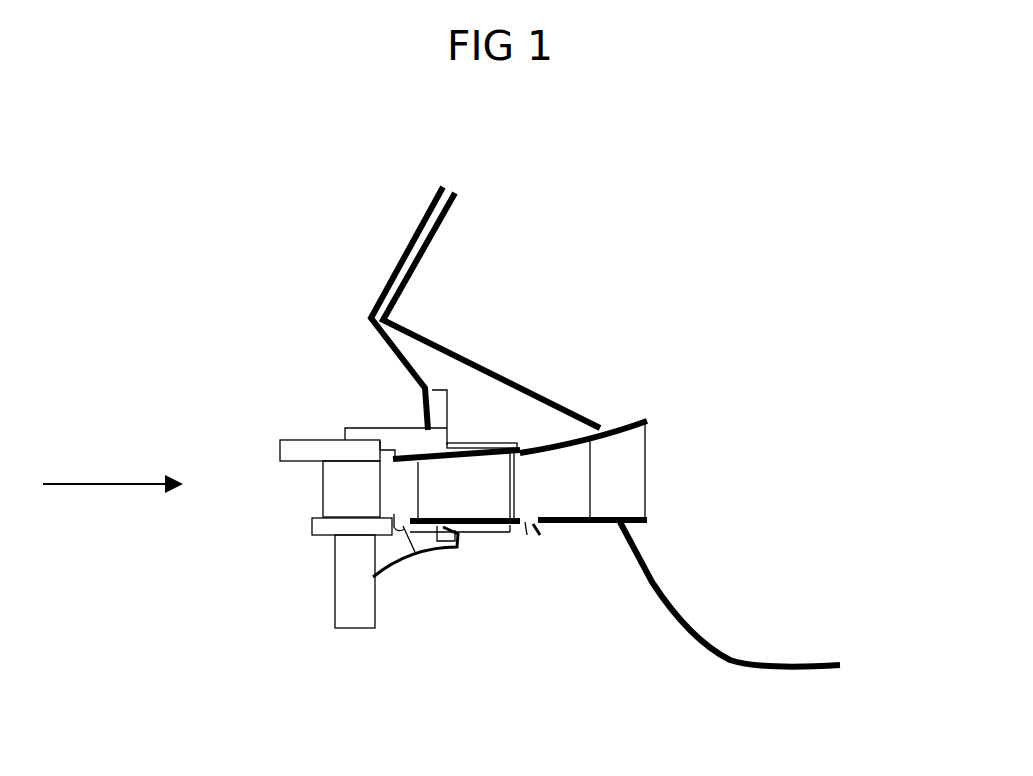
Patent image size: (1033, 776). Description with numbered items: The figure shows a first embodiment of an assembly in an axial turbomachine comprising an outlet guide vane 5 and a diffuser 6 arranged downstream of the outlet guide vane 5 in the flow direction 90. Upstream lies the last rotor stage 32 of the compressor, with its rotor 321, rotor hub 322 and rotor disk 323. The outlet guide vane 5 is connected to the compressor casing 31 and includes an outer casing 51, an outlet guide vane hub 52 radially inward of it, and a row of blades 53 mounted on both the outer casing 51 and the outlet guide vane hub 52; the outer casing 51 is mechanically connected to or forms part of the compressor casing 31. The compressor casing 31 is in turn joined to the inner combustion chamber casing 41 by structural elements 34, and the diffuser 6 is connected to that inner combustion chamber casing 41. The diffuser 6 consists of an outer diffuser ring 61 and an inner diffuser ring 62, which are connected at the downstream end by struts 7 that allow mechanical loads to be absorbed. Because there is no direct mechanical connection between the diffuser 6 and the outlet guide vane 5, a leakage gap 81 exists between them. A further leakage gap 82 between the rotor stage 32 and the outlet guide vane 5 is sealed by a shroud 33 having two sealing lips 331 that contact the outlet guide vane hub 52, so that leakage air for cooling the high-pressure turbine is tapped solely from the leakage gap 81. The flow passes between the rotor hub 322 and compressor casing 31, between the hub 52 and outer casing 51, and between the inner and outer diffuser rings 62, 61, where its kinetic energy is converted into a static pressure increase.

The flow direction 90 is at (102, 485).
The compressor casing 31 is at (362, 432).
The rotor stage 32 is at (307, 562).
The rotor 321 is at (337, 492).
The rotor hub 322 is at (315, 533).
The rotor disk 323 is at (340, 612).
The shroud 33 is at (443, 574).
The sealing lips 331 is at (461, 532).
The structural elements 34 is at (392, 343).
The inner combustion chamber casing 41 is at (483, 362).
The outlet guide vane 5 is at (468, 493).
The outer casing 51 is at (475, 447).
The outlet guide vane hub 52 is at (526, 535).
The row of blades 53 is at (492, 524).
The diffuser 6 is at (580, 486).
The outer diffuser ring 61 is at (558, 437).
The inner diffuser ring 62 is at (580, 525).
The struts 7 is at (633, 458).
The leakage gap 81 is at (538, 535).
The leakage gap 82 is at (415, 564).